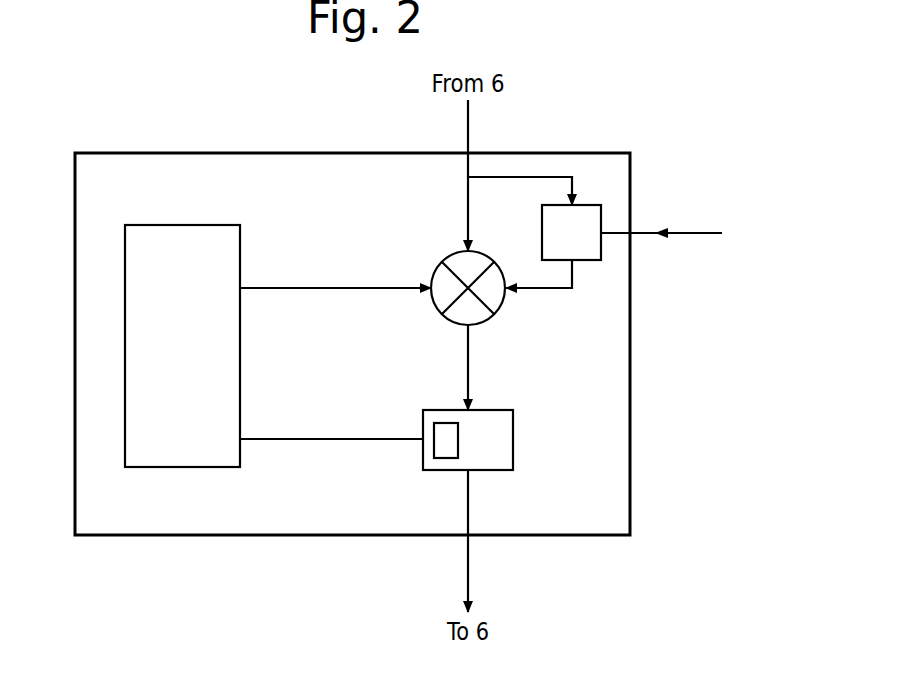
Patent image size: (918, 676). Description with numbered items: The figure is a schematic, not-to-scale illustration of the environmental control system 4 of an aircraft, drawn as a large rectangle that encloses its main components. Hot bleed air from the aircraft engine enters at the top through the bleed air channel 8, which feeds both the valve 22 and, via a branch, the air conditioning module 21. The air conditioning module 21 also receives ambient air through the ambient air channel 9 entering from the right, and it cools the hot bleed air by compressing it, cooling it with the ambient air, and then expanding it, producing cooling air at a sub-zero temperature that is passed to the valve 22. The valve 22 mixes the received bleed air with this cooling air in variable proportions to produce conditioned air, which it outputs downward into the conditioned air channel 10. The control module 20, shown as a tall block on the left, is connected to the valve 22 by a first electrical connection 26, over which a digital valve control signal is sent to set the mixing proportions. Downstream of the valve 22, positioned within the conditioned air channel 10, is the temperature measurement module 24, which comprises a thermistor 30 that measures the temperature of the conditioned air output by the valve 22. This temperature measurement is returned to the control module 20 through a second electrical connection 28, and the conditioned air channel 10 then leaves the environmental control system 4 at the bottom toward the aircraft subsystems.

The environmental control system 4 is at (220, 153).
The bleed air channel 8 is at (468, 121).
The ambient air channel 9 is at (683, 235).
The conditioned air channel 10 is at (468, 350).
The control module 20 is at (168, 225).
The air conditioning module 21 is at (601, 215).
The valve 22 is at (440, 265).
The temperature measurement module 24 is at (513, 432).
The first electrical connection 26 is at (313, 288).
The second electrical connection 28 is at (313, 438).
The thermistor 30 is at (445, 458).